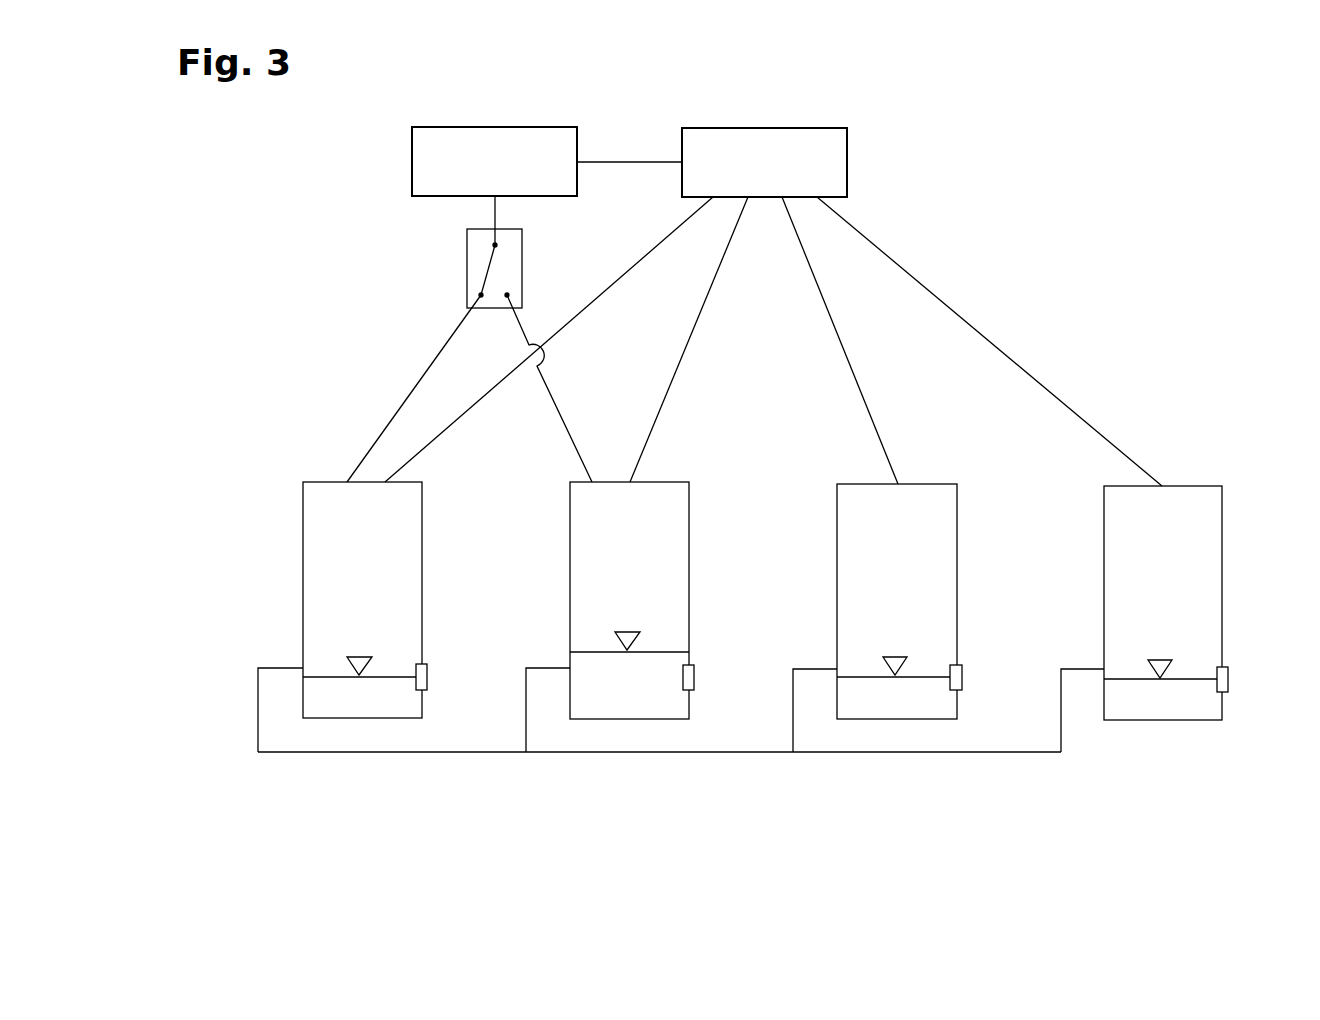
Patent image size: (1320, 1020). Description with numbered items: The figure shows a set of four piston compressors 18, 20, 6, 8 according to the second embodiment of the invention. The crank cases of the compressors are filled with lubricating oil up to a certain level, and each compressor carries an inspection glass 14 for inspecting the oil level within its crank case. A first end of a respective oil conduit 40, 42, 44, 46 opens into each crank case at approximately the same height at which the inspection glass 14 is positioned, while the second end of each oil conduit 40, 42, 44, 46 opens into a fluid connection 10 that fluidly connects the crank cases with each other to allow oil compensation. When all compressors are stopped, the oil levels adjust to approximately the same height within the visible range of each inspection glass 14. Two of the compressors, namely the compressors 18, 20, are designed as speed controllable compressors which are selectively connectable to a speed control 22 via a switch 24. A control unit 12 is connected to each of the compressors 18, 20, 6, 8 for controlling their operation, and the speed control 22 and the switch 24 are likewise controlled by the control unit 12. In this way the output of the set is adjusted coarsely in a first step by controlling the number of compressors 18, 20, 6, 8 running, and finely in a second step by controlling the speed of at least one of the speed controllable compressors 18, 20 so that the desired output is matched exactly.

The speed control 22 is at (492, 127).
The control unit 12 is at (762, 128).
The switch 24 is at (467, 265).
The speed controllable compressor 18 is at (330, 482).
The speed controllable compressor 20 is at (603, 482).
The piston compressor 6 is at (915, 484).
The piston compressor 8 is at (1188, 486).
The inspection glass 14 is at (427, 672).
The fluid connection 10 is at (703, 752).
The oil conduit 40 is at (258, 705).
The oil conduit 42 is at (520, 713).
The oil conduit 44 is at (790, 712).
The oil conduit 46 is at (1060, 712).